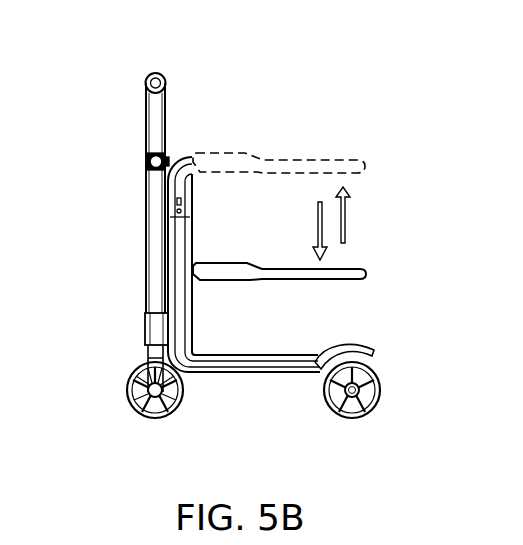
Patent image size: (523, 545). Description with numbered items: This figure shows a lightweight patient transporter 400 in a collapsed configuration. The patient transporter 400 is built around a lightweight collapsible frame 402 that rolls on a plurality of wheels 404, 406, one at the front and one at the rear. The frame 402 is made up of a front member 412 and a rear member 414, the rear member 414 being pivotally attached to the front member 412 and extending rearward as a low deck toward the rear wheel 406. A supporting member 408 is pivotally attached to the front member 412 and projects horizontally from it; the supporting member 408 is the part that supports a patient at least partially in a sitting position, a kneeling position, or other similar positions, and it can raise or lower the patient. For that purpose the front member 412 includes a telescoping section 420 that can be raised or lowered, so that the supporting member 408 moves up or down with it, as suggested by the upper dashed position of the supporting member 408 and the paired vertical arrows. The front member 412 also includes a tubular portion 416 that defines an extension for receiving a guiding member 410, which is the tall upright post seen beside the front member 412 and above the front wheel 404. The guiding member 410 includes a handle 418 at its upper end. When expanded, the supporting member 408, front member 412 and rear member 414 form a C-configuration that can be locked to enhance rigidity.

The patient transporter 400 is at (331, 73).
The lightweight collapsible frame 402 is at (198, 346).
The wheel 404 is at (126, 401).
The wheel 406 is at (382, 390).
The supporting member 408 is at (368, 275).
The guiding member 410 is at (153, 245).
The front member 412 is at (178, 239).
The rear member 414 is at (285, 365).
The tubular portion 416 is at (152, 330).
The handle 418 is at (147, 77).
The telescoping section 420 is at (174, 158).